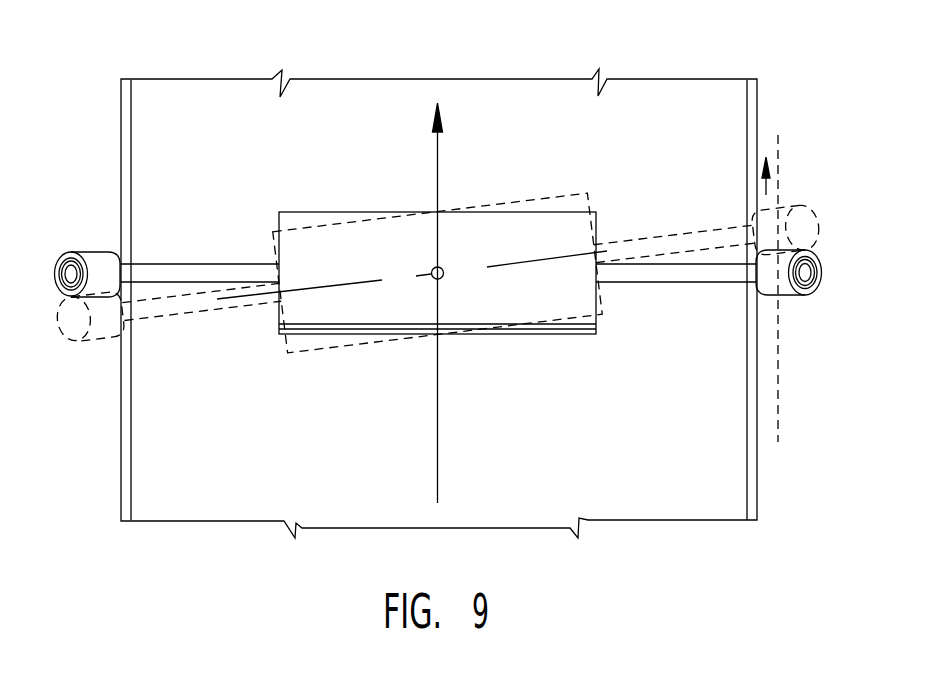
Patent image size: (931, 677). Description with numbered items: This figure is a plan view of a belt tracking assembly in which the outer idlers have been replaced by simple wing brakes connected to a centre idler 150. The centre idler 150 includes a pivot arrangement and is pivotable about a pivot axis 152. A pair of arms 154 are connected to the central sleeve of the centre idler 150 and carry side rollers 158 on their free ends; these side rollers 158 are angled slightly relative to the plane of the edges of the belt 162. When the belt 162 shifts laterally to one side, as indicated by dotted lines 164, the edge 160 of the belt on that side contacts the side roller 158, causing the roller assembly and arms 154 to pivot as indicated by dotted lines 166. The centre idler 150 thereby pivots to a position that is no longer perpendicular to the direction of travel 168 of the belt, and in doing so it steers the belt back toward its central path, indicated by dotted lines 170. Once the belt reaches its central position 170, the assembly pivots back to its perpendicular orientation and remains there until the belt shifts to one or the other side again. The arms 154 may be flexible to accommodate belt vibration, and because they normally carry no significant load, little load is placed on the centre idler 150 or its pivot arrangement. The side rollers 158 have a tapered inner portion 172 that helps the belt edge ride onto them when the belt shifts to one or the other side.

The centre idler 150 is at (330, 211).
The pivot axis 152 is at (444, 274).
The arms 154 is at (657, 283).
The side rollers 158 is at (87, 252).
The edge of the belt 160 is at (750, 465).
The belt 162 is at (738, 100).
The dotted lines indicating lateral shift of the belt 164 is at (778, 408).
The dotted lines indicating pivoted position of roller assembly 166 is at (672, 233).
The direction of travel of the belt 168 is at (440, 150).
The central path of the belt 170 is at (440, 405).
The tilted roller position 172 is at (772, 230).